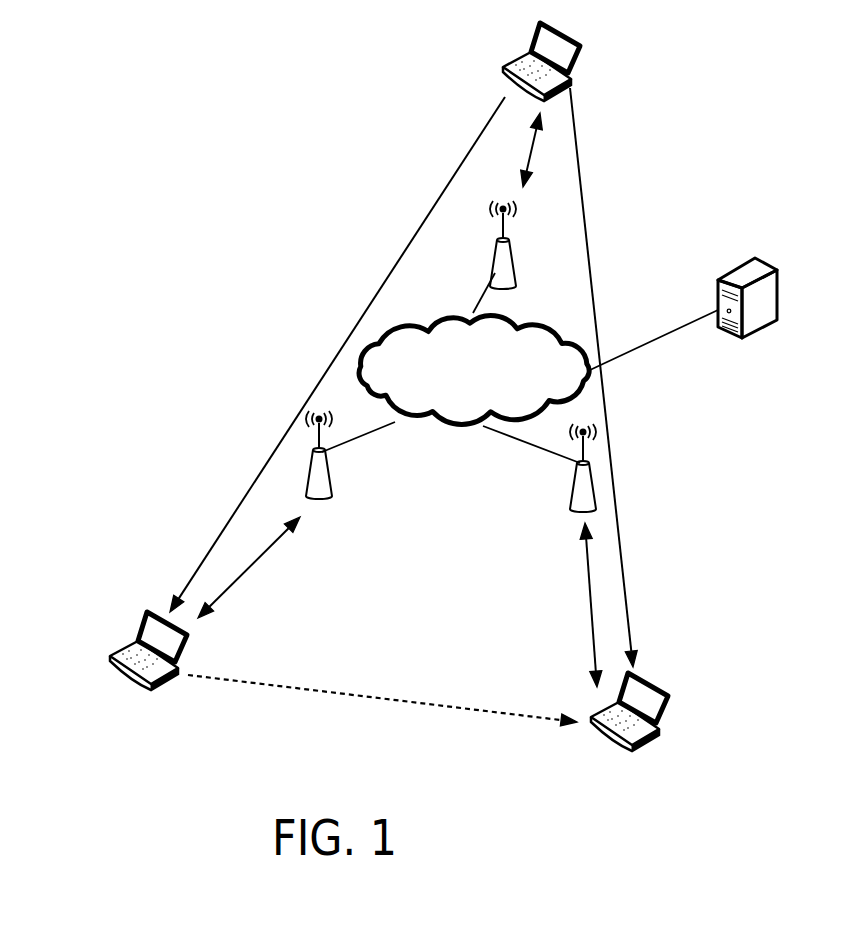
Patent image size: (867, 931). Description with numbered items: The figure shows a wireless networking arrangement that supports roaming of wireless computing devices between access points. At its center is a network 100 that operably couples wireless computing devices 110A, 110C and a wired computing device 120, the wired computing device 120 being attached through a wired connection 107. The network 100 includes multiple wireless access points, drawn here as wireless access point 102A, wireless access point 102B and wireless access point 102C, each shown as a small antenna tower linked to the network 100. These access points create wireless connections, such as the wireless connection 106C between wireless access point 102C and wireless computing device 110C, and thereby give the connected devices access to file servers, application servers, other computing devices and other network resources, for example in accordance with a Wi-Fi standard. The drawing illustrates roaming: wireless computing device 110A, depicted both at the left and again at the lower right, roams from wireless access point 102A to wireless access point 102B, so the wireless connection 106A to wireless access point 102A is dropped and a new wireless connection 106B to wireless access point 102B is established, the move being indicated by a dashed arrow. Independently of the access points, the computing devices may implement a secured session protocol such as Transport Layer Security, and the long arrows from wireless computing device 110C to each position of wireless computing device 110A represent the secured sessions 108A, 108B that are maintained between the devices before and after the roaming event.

The network 100 is at (493, 397).
The wireless access point 102A is at (330, 490).
The wireless access point 102B is at (570, 490).
The wireless access point 102C is at (493, 260).
The wireless connection 106A is at (252, 568).
The wireless connection 106B is at (590, 597).
The wireless connection 106C is at (530, 143).
The wired connection 107 is at (697, 320).
The secured session 108A is at (263, 470).
The secured session 108B is at (617, 480).
The wireless computing device 110A is at (113, 660).
The wireless computing device 110C is at (510, 60).
The wired computing device 120 is at (777, 283).